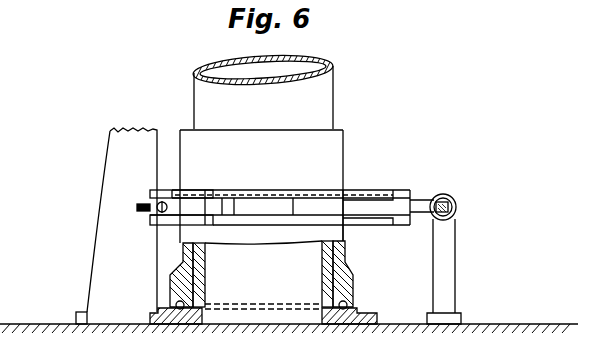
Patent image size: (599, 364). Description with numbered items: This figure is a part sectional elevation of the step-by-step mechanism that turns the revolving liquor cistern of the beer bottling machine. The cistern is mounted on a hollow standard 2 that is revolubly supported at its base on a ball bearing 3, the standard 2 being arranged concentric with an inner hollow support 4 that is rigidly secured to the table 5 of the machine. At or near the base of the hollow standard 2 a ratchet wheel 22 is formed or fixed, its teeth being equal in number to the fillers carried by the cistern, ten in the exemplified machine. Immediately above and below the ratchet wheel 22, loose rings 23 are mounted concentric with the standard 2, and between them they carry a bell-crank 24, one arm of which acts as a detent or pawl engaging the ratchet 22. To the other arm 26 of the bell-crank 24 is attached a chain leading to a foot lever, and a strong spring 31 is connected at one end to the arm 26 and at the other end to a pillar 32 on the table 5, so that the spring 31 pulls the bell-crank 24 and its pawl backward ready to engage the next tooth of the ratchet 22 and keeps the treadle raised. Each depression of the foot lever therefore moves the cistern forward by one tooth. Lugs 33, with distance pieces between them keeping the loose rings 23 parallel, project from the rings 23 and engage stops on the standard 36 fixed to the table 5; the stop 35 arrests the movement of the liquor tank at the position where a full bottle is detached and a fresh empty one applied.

The hollow standard 2 is at (185, 130).
The ball bearing 3 is at (170, 300).
The inner hollow support 4 is at (253, 82).
The table 5 is at (52, 324).
The ratchet wheel 22 is at (258, 206).
The loose rings 23 is at (308, 195).
The bell-crank 24 is at (398, 206).
The arm of bell-crank 26 is at (357, 204).
The spring 31 is at (448, 197).
The pillar 32 is at (455, 266).
The lugs 33 is at (212, 198).
The stop 35 is at (150, 212).
The standard 36 is at (103, 241).